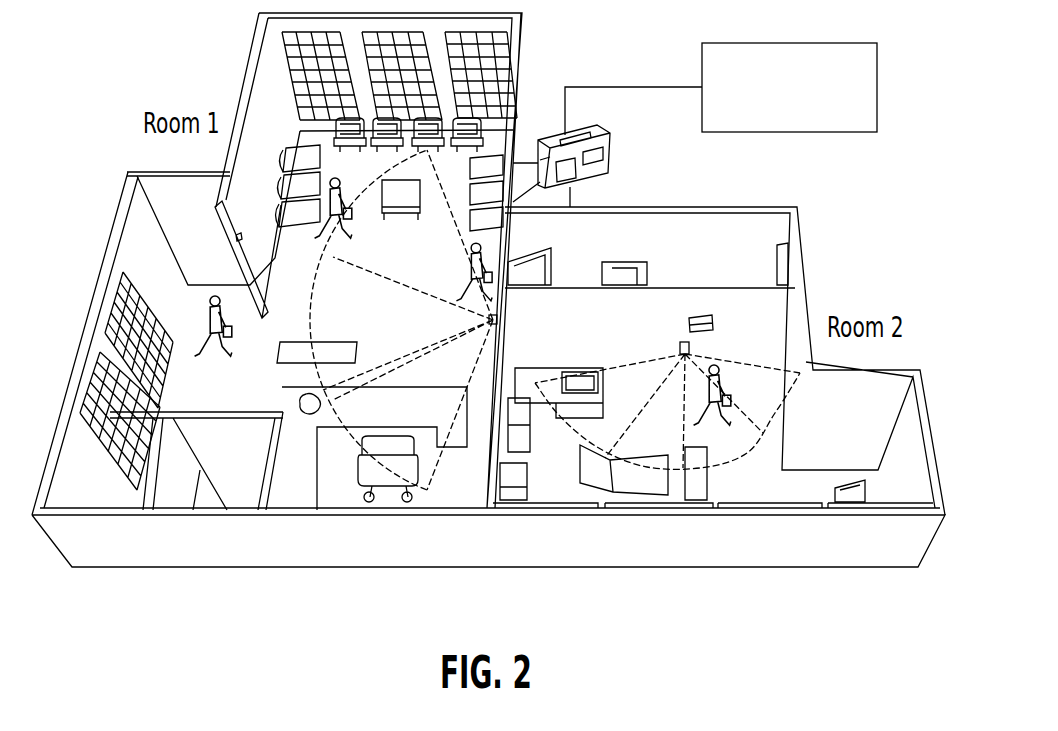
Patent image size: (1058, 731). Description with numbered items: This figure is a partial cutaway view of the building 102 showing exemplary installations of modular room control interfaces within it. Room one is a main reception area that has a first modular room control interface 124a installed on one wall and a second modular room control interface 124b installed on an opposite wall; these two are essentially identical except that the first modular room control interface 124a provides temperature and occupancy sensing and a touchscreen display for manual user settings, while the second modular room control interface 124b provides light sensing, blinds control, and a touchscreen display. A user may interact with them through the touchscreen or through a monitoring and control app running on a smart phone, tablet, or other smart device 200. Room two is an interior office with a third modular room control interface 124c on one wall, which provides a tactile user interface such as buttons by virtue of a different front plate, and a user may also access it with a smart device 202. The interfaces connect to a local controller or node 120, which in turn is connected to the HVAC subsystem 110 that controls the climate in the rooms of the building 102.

The building 102 is at (201, 54).
The HVAC subsystem 110 is at (847, 43).
The local controller or node 120 is at (607, 136).
The first modular room control interface 124a is at (489, 320).
The second modular room control interface 124b is at (231, 205).
The third modular room control interface 124c is at (686, 340).
The smart device 200 is at (220, 296).
The smart device 202 is at (712, 365).